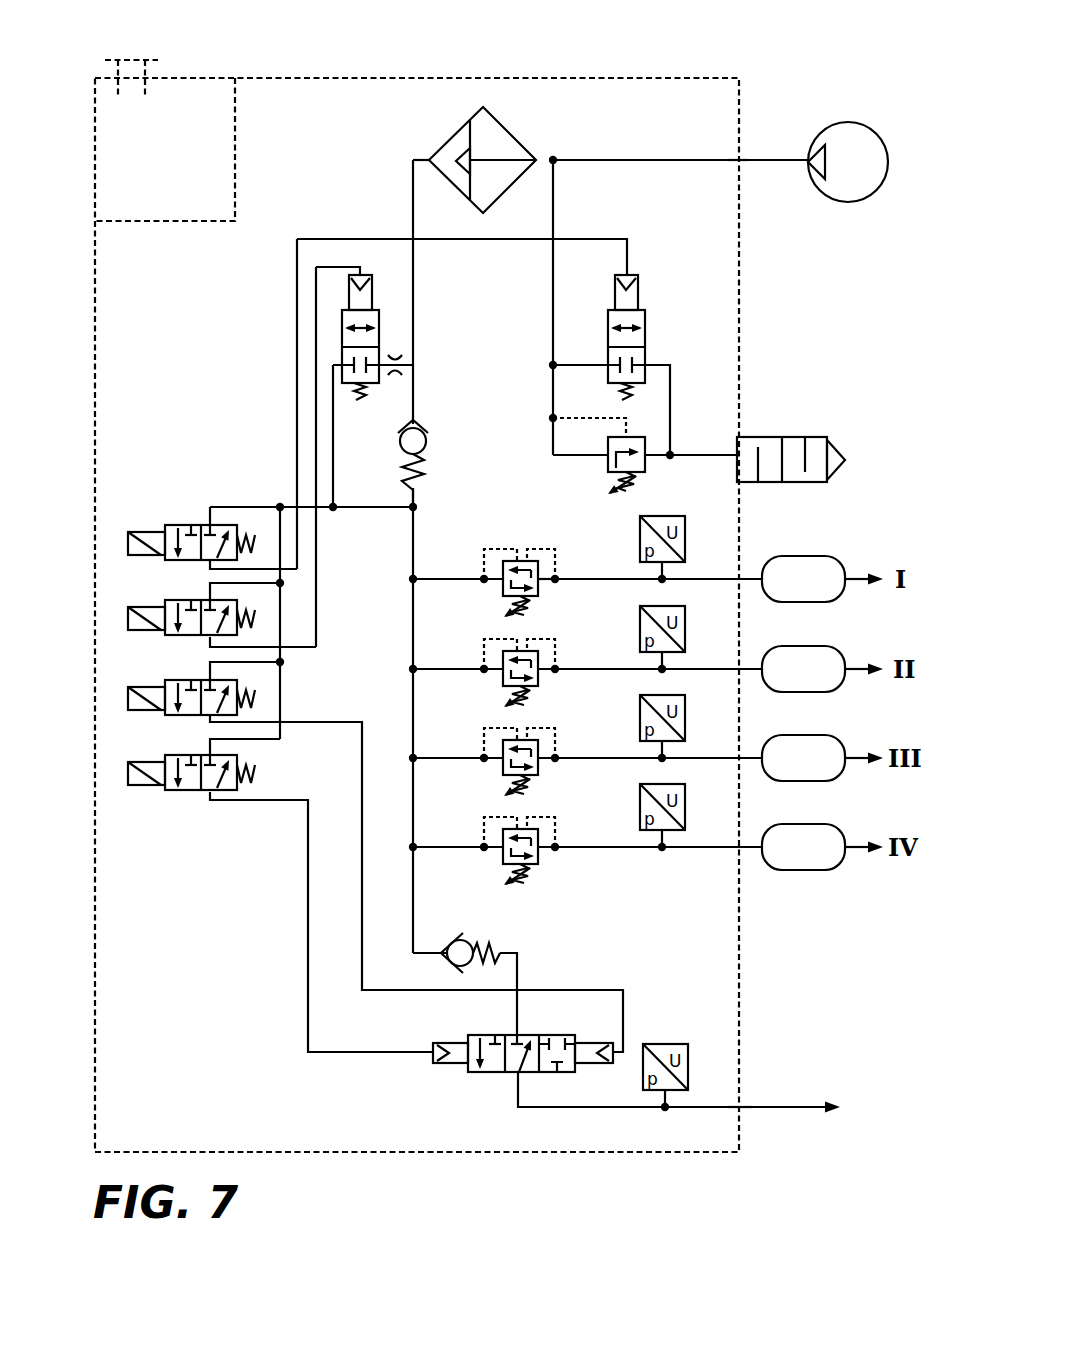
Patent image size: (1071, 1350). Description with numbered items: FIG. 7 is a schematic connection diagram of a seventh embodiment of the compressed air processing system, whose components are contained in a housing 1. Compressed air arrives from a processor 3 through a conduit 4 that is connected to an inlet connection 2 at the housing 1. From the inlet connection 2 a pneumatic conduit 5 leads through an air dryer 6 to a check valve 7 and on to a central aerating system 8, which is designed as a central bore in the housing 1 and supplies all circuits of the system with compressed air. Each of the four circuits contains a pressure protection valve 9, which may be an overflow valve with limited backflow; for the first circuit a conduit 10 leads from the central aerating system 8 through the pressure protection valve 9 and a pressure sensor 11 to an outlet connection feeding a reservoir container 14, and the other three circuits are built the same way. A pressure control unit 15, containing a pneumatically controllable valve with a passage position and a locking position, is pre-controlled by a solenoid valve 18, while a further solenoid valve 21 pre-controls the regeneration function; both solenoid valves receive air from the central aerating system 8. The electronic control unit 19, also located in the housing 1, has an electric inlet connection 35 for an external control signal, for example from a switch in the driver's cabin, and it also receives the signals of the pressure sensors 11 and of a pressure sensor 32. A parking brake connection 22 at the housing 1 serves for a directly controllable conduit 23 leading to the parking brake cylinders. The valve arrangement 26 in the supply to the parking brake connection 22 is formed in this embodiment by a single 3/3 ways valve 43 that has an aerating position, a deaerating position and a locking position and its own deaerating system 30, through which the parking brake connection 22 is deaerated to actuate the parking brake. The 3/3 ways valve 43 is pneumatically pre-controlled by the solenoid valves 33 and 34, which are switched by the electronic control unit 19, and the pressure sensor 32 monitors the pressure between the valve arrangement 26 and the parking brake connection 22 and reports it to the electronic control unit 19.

The housing 1 is at (374, 66).
The inlet connection 2 is at (738, 158).
The processor 3 is at (847, 133).
The conduit 4 is at (775, 158).
The pneumatic conduit 5 is at (588, 158).
The air dryer 6 is at (506, 110).
The check valve 7 is at (426, 431).
The central aerating system 8 is at (425, 487).
The pressure protection valve 9 is at (524, 545).
The conduit 10 is at (582, 578).
The pressure sensor 11 is at (686, 531).
The reservoir container 14 is at (806, 570).
The pressure control unit 15 is at (667, 336).
The solenoid valve 18 is at (118, 542).
The electronic control unit 19 is at (128, 156).
The solenoid valve 21 is at (116, 620).
The parking brake connection 22 is at (743, 1109).
The conduit 23 is at (779, 1107).
The valve arrangement 26 is at (512, 1099).
The deaerating system 30 is at (536, 1031).
The pressure sensor 32 is at (690, 1060).
The solenoid valve 33 is at (116, 699).
The solenoid valve 34 is at (119, 777).
The electric inlet connection 35 is at (132, 60).
The 3/3 ways valve 43 is at (501, 1094).